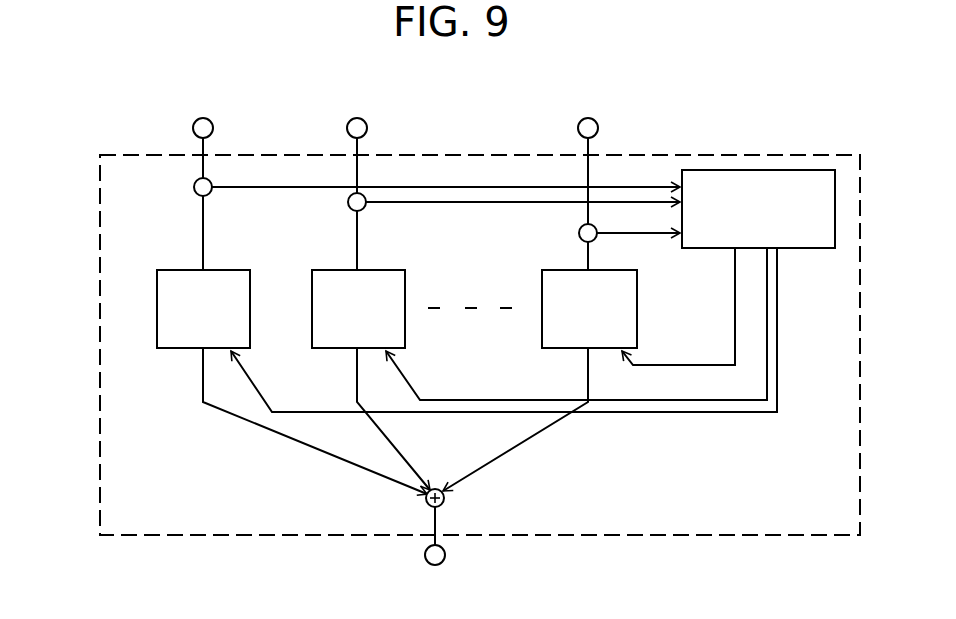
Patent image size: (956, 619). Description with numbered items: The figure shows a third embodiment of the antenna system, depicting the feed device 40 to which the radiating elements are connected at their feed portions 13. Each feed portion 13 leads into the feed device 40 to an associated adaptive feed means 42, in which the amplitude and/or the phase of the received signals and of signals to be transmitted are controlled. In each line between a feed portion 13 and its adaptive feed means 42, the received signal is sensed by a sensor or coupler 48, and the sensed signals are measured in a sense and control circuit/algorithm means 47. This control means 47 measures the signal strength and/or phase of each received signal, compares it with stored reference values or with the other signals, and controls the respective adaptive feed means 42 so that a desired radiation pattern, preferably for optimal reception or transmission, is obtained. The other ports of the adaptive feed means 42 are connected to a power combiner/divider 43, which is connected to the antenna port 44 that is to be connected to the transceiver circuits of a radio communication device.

The feed device 40 is at (100, 265).
The feed portion 13 is at (213, 128).
The sensor or coupler 48 is at (210, 194).
The sense and control circuit/algorithm means 47 is at (770, 170).
The adaptive feed means 42 is at (175, 348).
The power combiner/divider 43 is at (444, 501).
The antenna port 44 is at (445, 555).